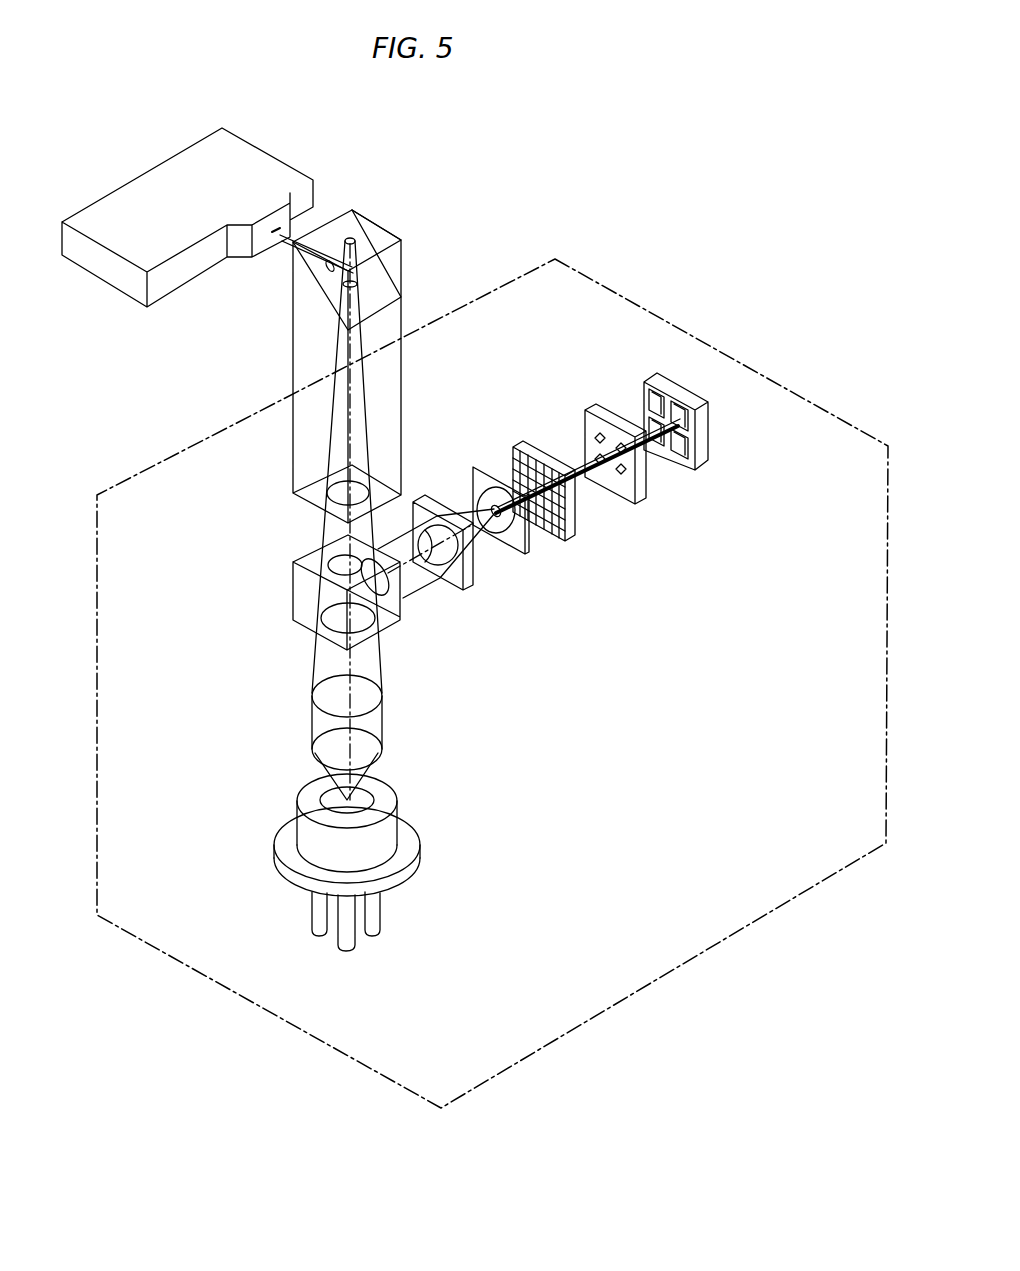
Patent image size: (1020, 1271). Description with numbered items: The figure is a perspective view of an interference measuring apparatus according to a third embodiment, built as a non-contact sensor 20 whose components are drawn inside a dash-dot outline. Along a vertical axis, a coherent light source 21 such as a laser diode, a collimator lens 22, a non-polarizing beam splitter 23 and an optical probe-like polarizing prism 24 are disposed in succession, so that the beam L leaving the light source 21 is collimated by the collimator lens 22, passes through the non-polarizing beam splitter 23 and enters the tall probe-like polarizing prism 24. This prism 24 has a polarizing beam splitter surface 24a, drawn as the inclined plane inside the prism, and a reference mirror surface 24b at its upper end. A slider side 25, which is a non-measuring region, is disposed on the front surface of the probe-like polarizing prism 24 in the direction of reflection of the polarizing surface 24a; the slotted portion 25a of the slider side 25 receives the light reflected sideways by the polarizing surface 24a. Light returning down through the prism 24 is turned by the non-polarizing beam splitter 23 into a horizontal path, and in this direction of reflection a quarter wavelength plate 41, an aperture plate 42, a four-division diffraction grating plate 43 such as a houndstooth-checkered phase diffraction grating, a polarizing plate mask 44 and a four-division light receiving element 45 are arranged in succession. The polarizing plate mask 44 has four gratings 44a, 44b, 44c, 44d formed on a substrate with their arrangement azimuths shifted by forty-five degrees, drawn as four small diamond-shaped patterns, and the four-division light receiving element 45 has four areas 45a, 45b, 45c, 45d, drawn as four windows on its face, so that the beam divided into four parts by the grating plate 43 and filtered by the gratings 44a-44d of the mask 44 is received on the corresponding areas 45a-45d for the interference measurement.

The non-contact sensor 20 is at (595, 280).
The coherent light source 21 is at (300, 825).
The collimator lens 22 is at (318, 722).
The non-polarizing beam splitter 23 is at (293, 600).
The probe-like polarizing prism 24 is at (403, 320).
The polarizing beam splitter surface 24a is at (322, 295).
The reference mirror surface 24b is at (383, 233).
The slider side 25 is at (157, 178).
The light receiving portion 25a is at (272, 232).
The quarter wavelength plate 41 is at (453, 593).
The aperture plate 42 is at (513, 562).
The four-division diffraction grating plate 43 is at (573, 537).
The polarizing plate mask 44 is at (632, 504).
The grating 44a is at (620, 472).
The grating 44b is at (623, 474).
The grating 44c is at (590, 438).
The grating 44d is at (592, 457).
The four-division light receiving element 45 is at (702, 467).
The light receiving area 45a is at (708, 455).
The light receiving area 45b is at (708, 423).
The light receiving area 45c is at (645, 395).
The light receiving area 45d is at (648, 427).
The laser beam L is at (315, 657).